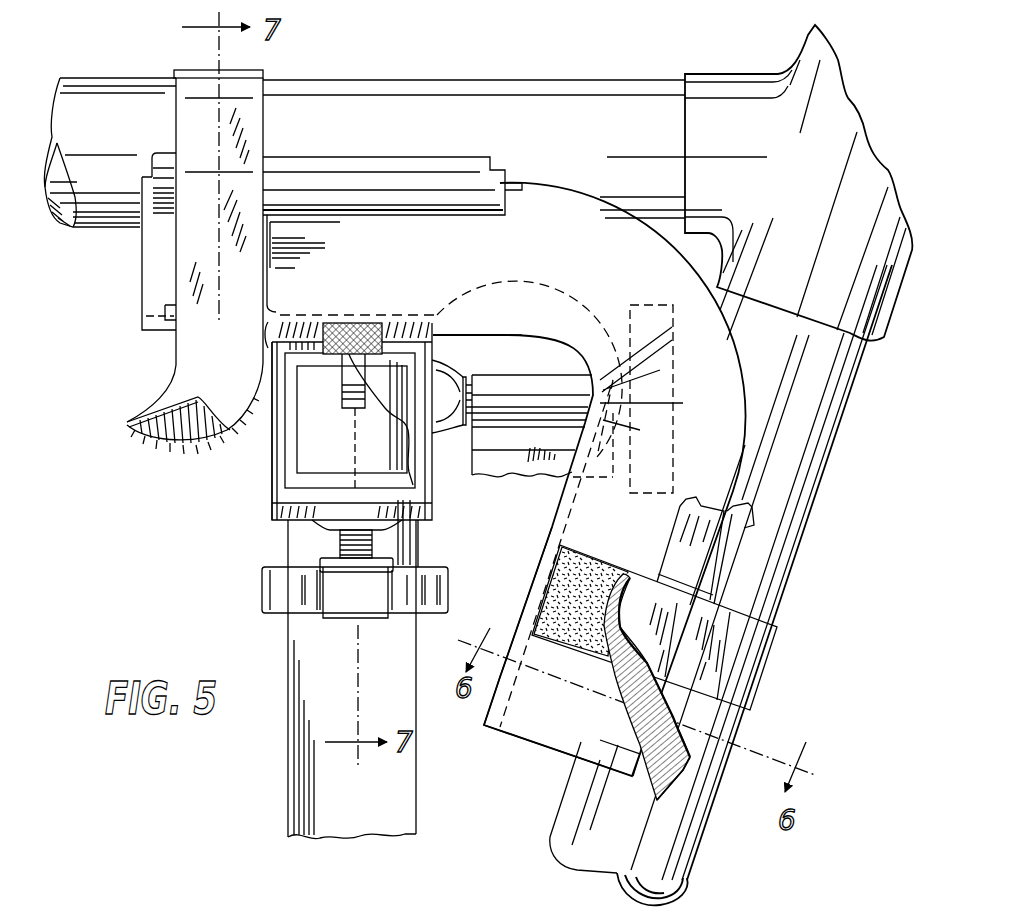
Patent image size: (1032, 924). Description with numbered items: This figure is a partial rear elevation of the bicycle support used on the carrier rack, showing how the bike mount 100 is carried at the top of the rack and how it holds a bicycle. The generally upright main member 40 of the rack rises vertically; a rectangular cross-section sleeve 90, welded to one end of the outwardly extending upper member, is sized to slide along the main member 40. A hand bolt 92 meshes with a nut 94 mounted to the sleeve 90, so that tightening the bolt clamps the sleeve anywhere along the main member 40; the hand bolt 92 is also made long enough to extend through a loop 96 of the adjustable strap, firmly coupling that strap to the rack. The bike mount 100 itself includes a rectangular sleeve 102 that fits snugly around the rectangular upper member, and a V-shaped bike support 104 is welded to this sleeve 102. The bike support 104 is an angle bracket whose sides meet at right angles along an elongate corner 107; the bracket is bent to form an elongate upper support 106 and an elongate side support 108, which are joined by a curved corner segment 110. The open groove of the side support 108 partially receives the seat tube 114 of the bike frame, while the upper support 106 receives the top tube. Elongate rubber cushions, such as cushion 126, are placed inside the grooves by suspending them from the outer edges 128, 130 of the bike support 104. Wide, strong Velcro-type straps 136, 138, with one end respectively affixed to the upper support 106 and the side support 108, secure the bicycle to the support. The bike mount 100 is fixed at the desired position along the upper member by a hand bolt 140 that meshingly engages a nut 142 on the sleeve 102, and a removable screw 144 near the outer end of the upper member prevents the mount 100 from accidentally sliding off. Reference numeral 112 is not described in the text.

The main member 40 is at (288, 740).
The sleeve 90 is at (270, 525).
The hand bolt 92 is at (650, 300).
The nut 94 is at (450, 372).
The loop 96 is at (520, 458).
The bike mount 100 is at (222, 519).
The rectangular sleeve 102 is at (277, 435).
The bike support 104 is at (568, 172).
The upper support 106 is at (157, 265).
The elongate corner 107 is at (513, 338).
The side support 108 is at (545, 728).
The curved corner segment 110 is at (708, 360).
The horizontal tube 112 is at (545, 80).
The seat tube 114 is at (797, 562).
The rubber cushion 126 is at (383, 195).
The outer edge 128 is at (488, 920).
The outer edge 130 is at (520, 182).
The Velcro-type strap 136 is at (248, 83).
The Velcro-type strap 138 is at (763, 667).
The hand bolt 140 is at (262, 598).
The nut 142 is at (378, 517).
The removable screw 144 is at (360, 388).